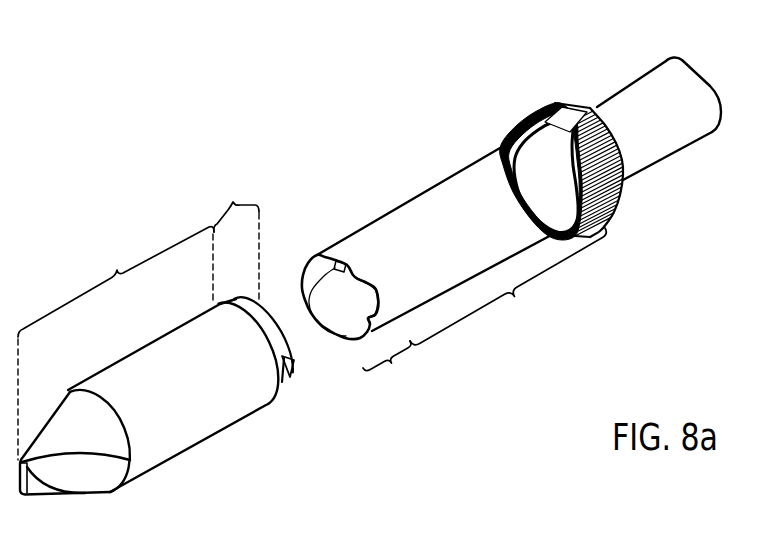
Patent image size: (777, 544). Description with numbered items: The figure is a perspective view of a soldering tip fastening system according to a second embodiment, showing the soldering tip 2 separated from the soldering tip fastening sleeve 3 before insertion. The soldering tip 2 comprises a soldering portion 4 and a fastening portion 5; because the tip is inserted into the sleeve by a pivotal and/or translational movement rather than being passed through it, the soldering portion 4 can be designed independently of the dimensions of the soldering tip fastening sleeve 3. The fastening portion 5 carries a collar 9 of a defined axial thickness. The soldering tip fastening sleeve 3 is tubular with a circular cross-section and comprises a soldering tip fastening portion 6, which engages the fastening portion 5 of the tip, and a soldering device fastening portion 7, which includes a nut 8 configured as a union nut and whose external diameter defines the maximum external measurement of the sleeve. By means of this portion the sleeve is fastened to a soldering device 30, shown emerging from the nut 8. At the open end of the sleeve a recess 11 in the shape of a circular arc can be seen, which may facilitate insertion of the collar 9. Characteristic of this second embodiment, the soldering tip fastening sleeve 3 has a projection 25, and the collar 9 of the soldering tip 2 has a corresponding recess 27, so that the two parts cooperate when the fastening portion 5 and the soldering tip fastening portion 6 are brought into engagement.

The soldering tip 2 is at (200, 430).
The soldering tip fastening sleeve 3 is at (448, 200).
The soldering portion 4 is at (116, 343).
The fastening portion 5 is at (236, 237).
The soldering tip fastening portion 6 is at (387, 372).
The soldering device fastening portion 7 is at (508, 286).
The nut 8 is at (537, 120).
The collar 9 is at (274, 327).
The recess 11 is at (373, 287).
The projection 25 is at (340, 258).
The recess 27 is at (292, 360).
The soldering device 30 is at (633, 93).